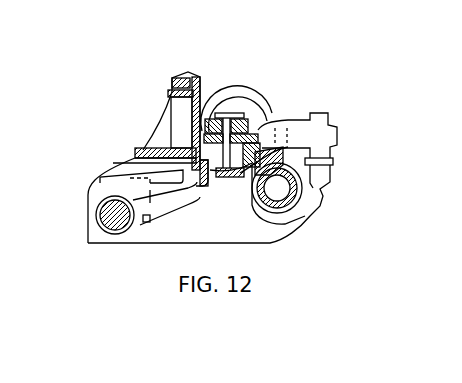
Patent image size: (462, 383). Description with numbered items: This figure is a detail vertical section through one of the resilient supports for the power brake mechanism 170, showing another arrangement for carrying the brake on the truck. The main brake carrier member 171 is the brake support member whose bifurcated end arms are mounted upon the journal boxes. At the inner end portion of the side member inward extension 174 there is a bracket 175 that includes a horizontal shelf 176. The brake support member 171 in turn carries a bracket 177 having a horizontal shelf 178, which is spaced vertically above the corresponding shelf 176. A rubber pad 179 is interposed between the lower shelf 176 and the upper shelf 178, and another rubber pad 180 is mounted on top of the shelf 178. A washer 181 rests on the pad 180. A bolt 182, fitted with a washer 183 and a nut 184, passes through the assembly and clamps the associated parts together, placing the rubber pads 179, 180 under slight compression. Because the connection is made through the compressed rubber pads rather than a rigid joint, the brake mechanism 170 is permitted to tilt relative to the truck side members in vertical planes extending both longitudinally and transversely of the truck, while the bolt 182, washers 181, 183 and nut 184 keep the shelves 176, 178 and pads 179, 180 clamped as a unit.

The power brake mechanism 170 is at (221, 113).
The main brake carrier member 171 is at (297, 207).
The side member inward extension 174 is at (90, 199).
The bracket 175 is at (147, 223).
The horizontal shelf 176 is at (300, 120).
The bracket 177 is at (335, 156).
The horizontal shelf 178 is at (197, 138).
The rubber pad 179 is at (200, 145).
The rubber pad 180 is at (262, 128).
The washer 181 is at (245, 125).
The bolt 182 is at (229, 113).
The washer 183 is at (212, 178).
The nut 184 is at (258, 203).